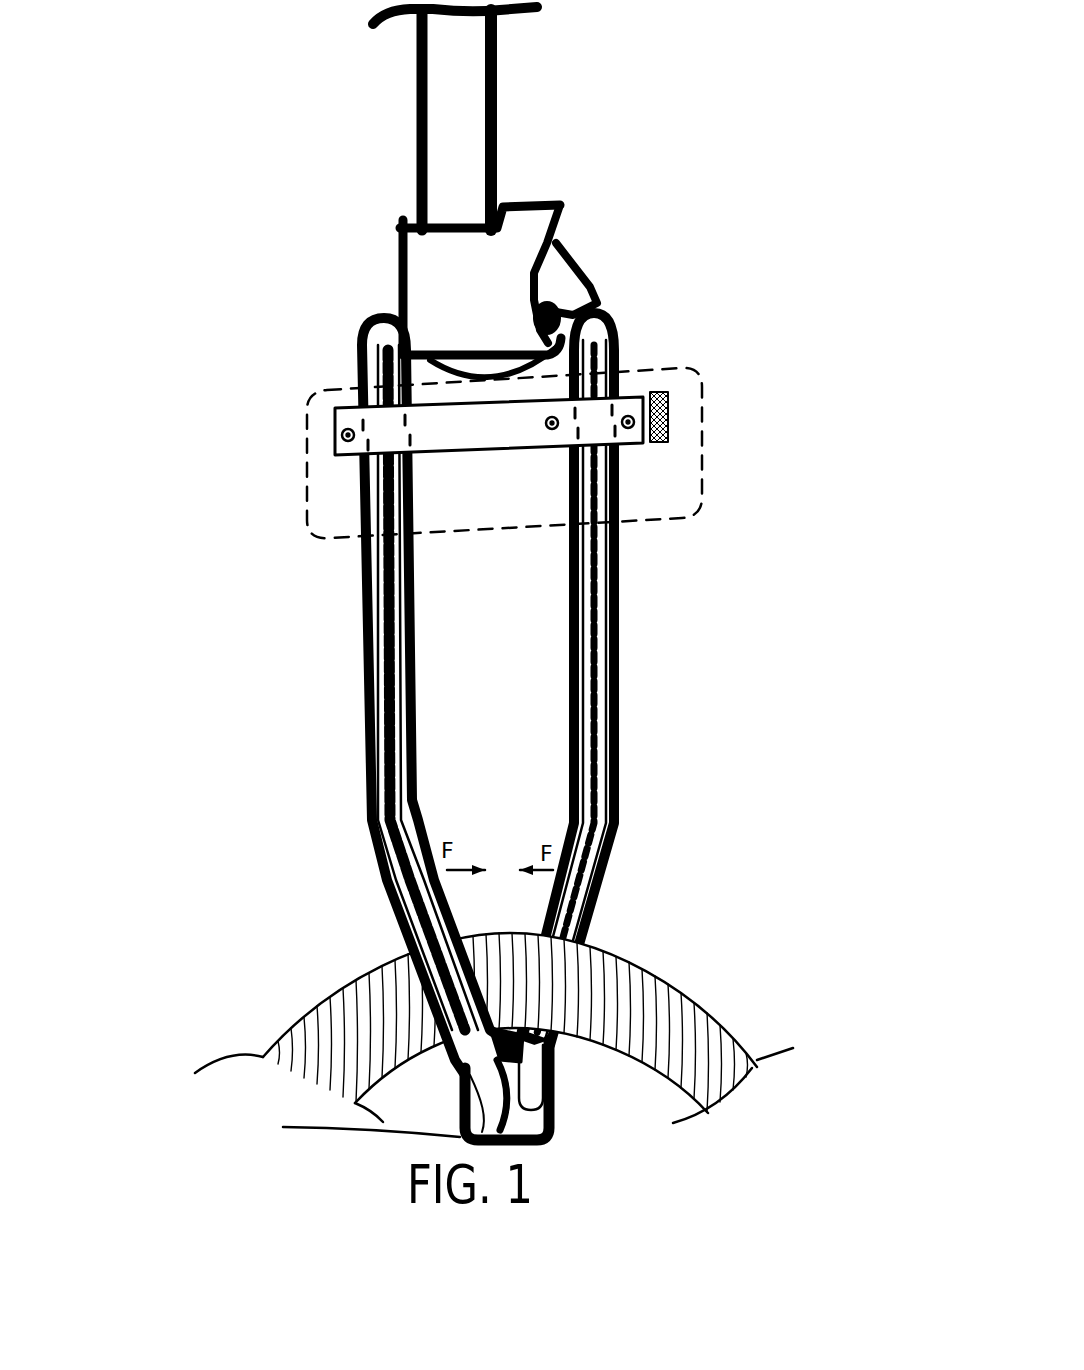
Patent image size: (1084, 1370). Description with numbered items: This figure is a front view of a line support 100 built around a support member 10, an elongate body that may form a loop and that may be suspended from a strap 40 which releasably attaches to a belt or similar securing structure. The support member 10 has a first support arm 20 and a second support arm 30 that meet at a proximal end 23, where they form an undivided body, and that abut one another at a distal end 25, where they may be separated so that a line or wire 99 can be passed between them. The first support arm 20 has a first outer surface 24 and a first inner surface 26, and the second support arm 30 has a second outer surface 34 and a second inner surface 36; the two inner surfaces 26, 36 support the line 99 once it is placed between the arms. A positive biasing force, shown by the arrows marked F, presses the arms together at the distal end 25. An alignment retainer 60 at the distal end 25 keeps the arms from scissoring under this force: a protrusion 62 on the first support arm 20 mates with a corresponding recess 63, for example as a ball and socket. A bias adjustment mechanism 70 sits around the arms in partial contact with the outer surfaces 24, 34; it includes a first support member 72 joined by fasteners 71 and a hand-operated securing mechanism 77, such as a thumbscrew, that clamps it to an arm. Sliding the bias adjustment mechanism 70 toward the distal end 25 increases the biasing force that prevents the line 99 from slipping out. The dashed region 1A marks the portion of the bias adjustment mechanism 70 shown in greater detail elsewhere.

The line support 100 is at (491, 593).
The support member 10 is at (423, 593).
The strap 40 is at (500, 183).
The proximal end 23 is at (370, 280).
The first support arm 20 is at (375, 696).
The first outer surface 24 is at (362, 743).
The first inner surface 26 is at (418, 741).
The second support arm 30 is at (599, 679).
The second outer surface 34 is at (622, 612).
The second inner surface 36 is at (570, 590).
The alignment retainer 60 is at (561, 1103).
The recess 63 is at (543, 1097).
The distal end 25 is at (582, 1117).
The bias adjustment mechanism 70 is at (446, 455).
The fastener 71 is at (348, 460).
The first support member 72 is at (463, 433).
The securing mechanism 77 is at (660, 388).
The detail region 1A is at (698, 380).
The line 99 is at (628, 968).
The protrusion 62 is at (494, 1095).